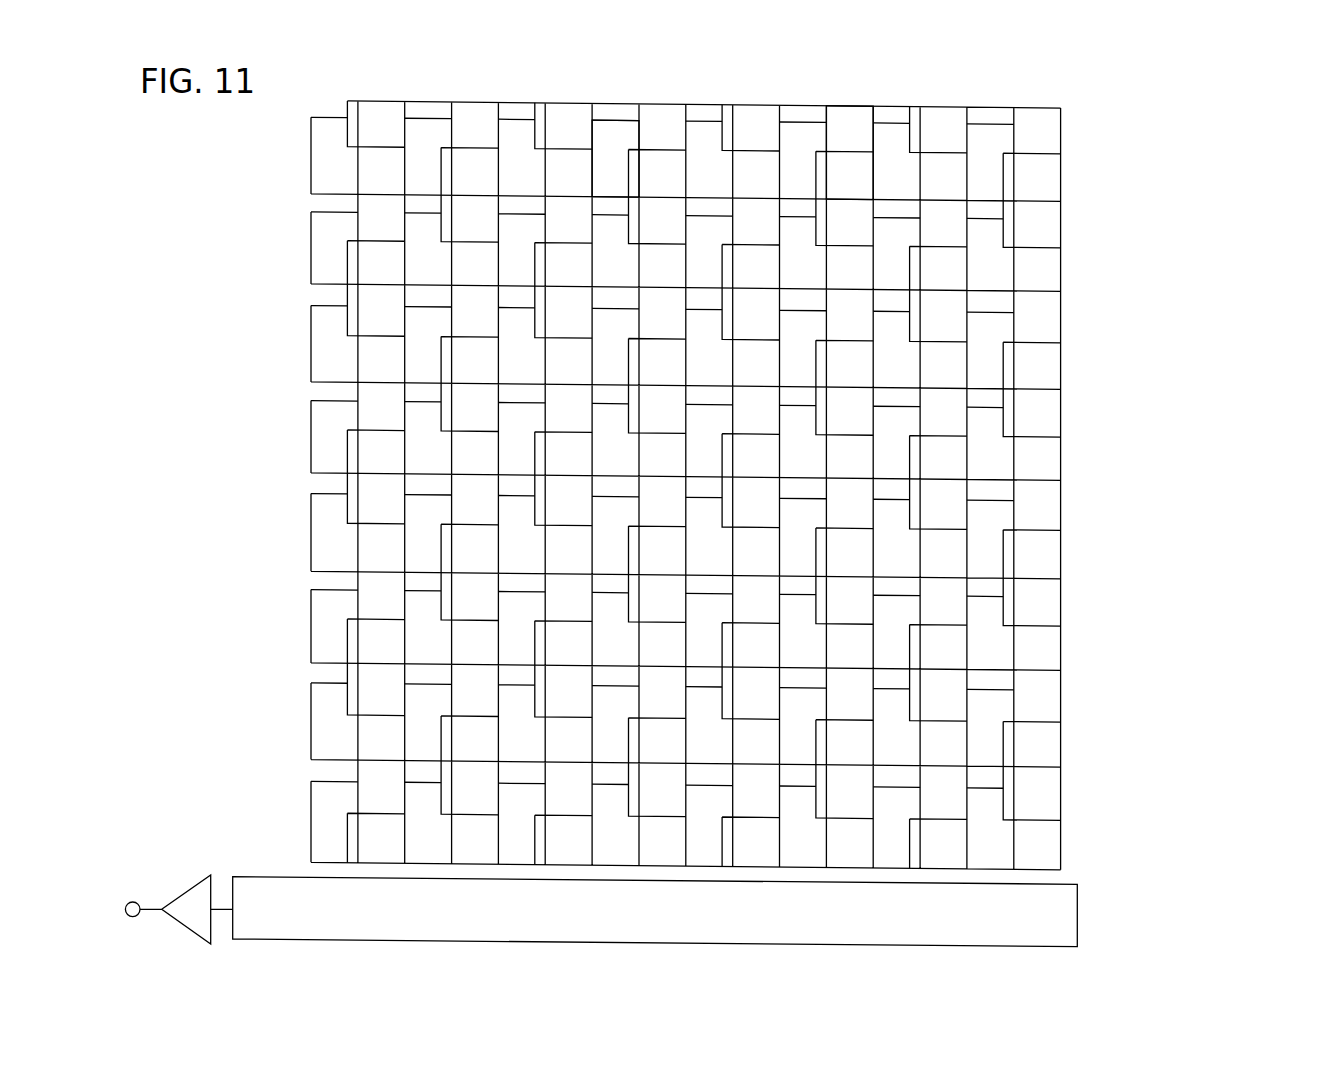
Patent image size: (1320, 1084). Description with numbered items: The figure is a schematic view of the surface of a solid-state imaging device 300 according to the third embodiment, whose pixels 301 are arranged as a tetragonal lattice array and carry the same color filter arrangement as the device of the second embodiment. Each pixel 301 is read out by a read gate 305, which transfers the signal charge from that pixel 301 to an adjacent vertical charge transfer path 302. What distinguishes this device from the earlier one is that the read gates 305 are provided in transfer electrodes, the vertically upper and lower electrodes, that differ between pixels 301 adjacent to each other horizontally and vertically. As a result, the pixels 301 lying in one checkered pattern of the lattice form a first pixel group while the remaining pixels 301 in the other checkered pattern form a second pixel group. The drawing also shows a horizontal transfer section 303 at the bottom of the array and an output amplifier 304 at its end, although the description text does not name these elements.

The solid-state imaging device 300 is at (1172, 151).
The pixel 301 is at (608, 141).
The vertical charge transfer path 302 is at (852, 122).
The horizontal CCD (HCCD) 303 is at (1079, 911).
The output amplifier 304 is at (182, 894).
The read gate 305 is at (728, 133).